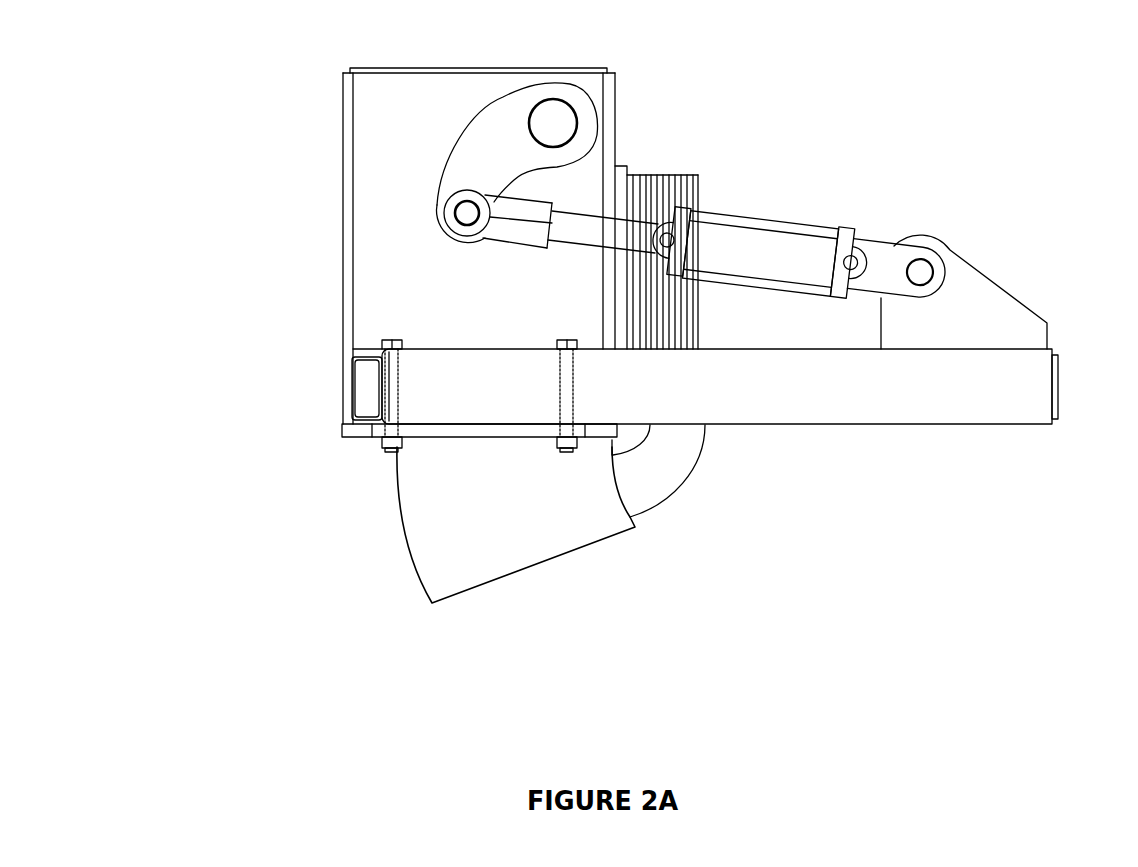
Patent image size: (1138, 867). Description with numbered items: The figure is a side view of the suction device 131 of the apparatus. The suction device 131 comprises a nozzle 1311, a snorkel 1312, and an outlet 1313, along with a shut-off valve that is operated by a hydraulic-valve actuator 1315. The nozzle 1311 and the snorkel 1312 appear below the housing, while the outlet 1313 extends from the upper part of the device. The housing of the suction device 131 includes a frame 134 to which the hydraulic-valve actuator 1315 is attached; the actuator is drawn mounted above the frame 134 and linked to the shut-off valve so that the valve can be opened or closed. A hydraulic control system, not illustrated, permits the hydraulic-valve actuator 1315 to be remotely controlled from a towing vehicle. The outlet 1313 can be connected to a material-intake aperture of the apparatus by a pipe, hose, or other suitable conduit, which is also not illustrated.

The suction device 131 is at (606, 343).
The nozzle 1311 is at (530, 568).
The snorkel 1312 is at (680, 487).
The outlet 1313 is at (673, 172).
The hydraulic-valve actuator 1315 is at (805, 185).
The frame 134 is at (1007, 425).